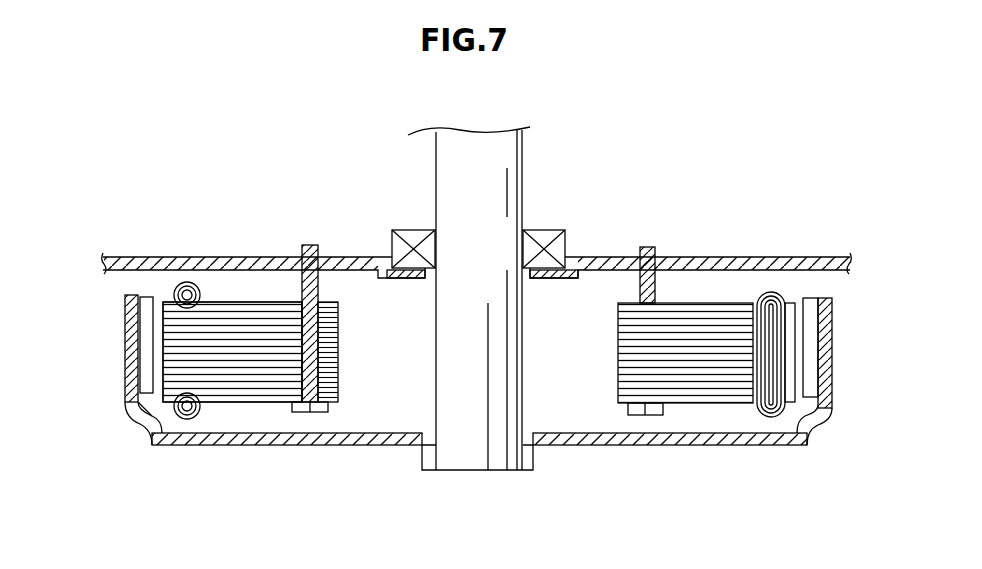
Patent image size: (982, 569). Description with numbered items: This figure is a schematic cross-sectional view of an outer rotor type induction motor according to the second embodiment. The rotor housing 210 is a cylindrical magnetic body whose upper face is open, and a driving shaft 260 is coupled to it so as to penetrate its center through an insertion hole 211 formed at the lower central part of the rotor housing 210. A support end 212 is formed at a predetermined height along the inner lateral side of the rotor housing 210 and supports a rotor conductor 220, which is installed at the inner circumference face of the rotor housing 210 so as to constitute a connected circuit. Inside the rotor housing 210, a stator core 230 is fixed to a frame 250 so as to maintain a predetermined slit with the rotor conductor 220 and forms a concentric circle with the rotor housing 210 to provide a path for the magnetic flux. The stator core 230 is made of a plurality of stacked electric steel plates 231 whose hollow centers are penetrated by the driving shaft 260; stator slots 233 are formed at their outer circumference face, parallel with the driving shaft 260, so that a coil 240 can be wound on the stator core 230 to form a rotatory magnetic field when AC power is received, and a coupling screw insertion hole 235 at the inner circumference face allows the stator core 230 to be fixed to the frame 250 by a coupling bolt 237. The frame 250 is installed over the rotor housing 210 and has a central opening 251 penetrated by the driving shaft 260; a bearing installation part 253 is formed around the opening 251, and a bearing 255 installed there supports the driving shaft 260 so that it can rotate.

The rotor housing 210 is at (147, 425).
The insertion hole 211 is at (435, 457).
The support end 212 is at (147, 403).
The rotor conductor 220 is at (146, 322).
The stator core 230 is at (255, 300).
The electric steel plates 231 is at (225, 301).
The stator slots 233 is at (753, 341).
The coupling screw insertion hole 235 is at (306, 348).
The coupling bolt 237 is at (645, 248).
The coil 240 is at (192, 289).
The frame 250 is at (735, 258).
The opening 251 is at (530, 279).
The bearing installation part 253 is at (385, 279).
The bearing 255 is at (554, 241).
The driving shaft 260 is at (524, 372).